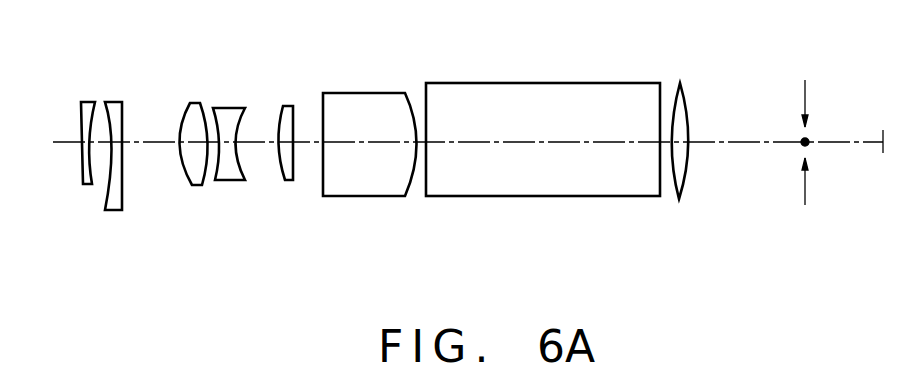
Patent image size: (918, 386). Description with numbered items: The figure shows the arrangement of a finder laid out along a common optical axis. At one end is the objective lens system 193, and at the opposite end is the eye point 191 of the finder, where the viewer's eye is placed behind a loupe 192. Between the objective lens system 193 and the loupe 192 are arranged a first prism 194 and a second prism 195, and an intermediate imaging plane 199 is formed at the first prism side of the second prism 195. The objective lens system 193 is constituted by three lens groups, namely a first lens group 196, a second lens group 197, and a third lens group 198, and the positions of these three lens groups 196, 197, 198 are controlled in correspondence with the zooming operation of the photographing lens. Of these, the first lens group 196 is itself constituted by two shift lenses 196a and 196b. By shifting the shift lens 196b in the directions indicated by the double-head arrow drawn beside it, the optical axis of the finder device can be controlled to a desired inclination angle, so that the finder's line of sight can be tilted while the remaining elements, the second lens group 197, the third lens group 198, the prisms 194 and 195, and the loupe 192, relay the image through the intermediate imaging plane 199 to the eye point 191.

The eye point 191 is at (807, 98).
The loupe 192 is at (690, 107).
The objective lens system 193 is at (77, 85).
The first prism 194 is at (369, 93).
The second prism 195 is at (555, 83).
The first lens group 196 is at (137, 217).
The shift lens 196a is at (81, 170).
The shift lens 196b is at (123, 183).
The second lens group 197 is at (173, 193).
The third lens group 198 is at (290, 181).
The intermediate imaging plane 199 is at (423, 185).